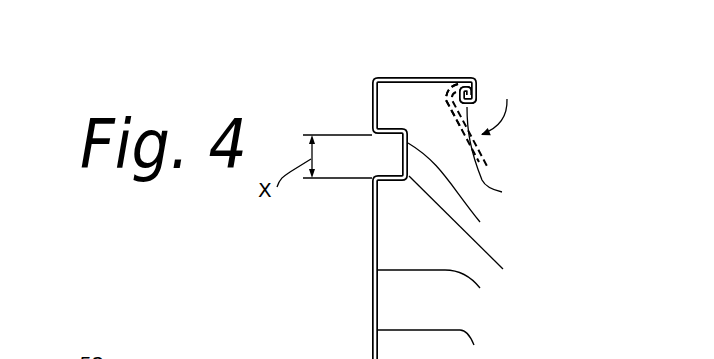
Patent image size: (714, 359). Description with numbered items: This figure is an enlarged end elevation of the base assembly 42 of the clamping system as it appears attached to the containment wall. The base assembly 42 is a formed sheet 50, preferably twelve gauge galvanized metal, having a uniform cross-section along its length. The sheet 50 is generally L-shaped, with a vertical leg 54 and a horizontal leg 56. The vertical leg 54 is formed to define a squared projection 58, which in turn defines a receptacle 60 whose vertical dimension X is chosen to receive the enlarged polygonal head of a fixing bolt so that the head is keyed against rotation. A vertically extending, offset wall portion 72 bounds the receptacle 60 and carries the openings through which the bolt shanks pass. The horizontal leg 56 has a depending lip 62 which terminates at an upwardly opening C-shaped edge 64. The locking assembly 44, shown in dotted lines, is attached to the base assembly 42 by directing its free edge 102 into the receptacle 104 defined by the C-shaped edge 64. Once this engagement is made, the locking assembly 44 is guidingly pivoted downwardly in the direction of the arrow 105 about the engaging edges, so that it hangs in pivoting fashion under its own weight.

The base assembly 42 is at (474, 345).
The locking assembly 44 is at (483, 151).
The formed sheet 50 is at (480, 288).
The vertical leg 54 is at (371, 244).
The horizontal leg 56 is at (415, 79).
The squared projection 58 is at (503, 269).
The receptacle 60 is at (371, 141).
The depending lip 62 is at (474, 87).
The C-shaped edge 64 is at (502, 192).
The offset wall portion 72 is at (480, 222).
The free edge 102 is at (476, 90).
The receptacle 104 is at (465, 88).
The direction of rotation 105 is at (508, 100).